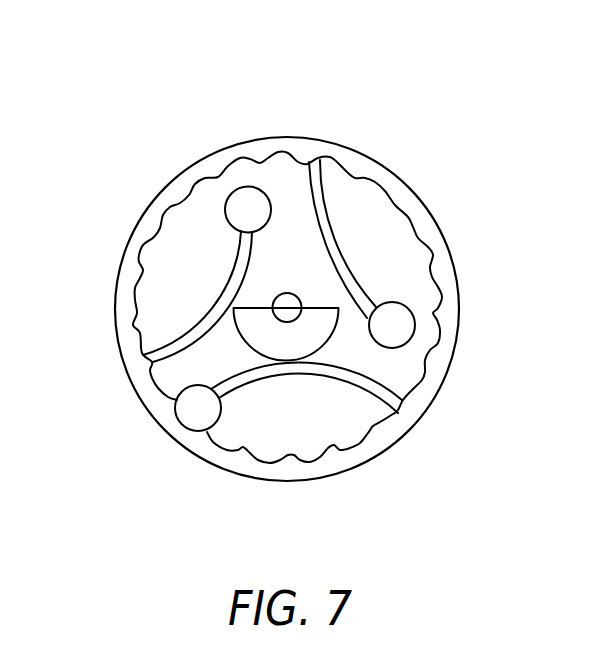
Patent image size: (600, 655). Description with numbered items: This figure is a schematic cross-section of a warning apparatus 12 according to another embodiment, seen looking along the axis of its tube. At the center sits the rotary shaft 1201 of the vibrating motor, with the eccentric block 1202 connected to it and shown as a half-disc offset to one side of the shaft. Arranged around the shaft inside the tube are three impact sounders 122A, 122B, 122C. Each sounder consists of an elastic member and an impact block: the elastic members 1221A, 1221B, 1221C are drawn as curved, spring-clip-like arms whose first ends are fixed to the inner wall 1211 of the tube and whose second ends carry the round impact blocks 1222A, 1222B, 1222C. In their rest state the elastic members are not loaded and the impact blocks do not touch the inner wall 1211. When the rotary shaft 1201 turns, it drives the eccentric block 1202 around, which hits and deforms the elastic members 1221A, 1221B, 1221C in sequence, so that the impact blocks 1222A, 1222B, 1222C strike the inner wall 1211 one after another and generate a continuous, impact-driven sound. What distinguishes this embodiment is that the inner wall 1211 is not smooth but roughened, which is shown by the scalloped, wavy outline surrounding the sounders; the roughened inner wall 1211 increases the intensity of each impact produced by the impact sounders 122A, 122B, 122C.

The warning apparatus 12 is at (487, 85).
The inner wall 1211 is at (353, 178).
The rotary shaft 1201 is at (281, 294).
The eccentric block 1202 is at (260, 333).
The elastic member 1221A is at (290, 377).
The elastic member 1221B is at (227, 273).
The elastic member 1221C is at (328, 250).
The impact block 1222A is at (190, 417).
The impact block 1222B is at (245, 208).
The impact block 1222C is at (400, 325).
The impact sounder 122A is at (375, 412).
The impact sounder 122B is at (162, 320).
The impact sounder 122C is at (383, 284).